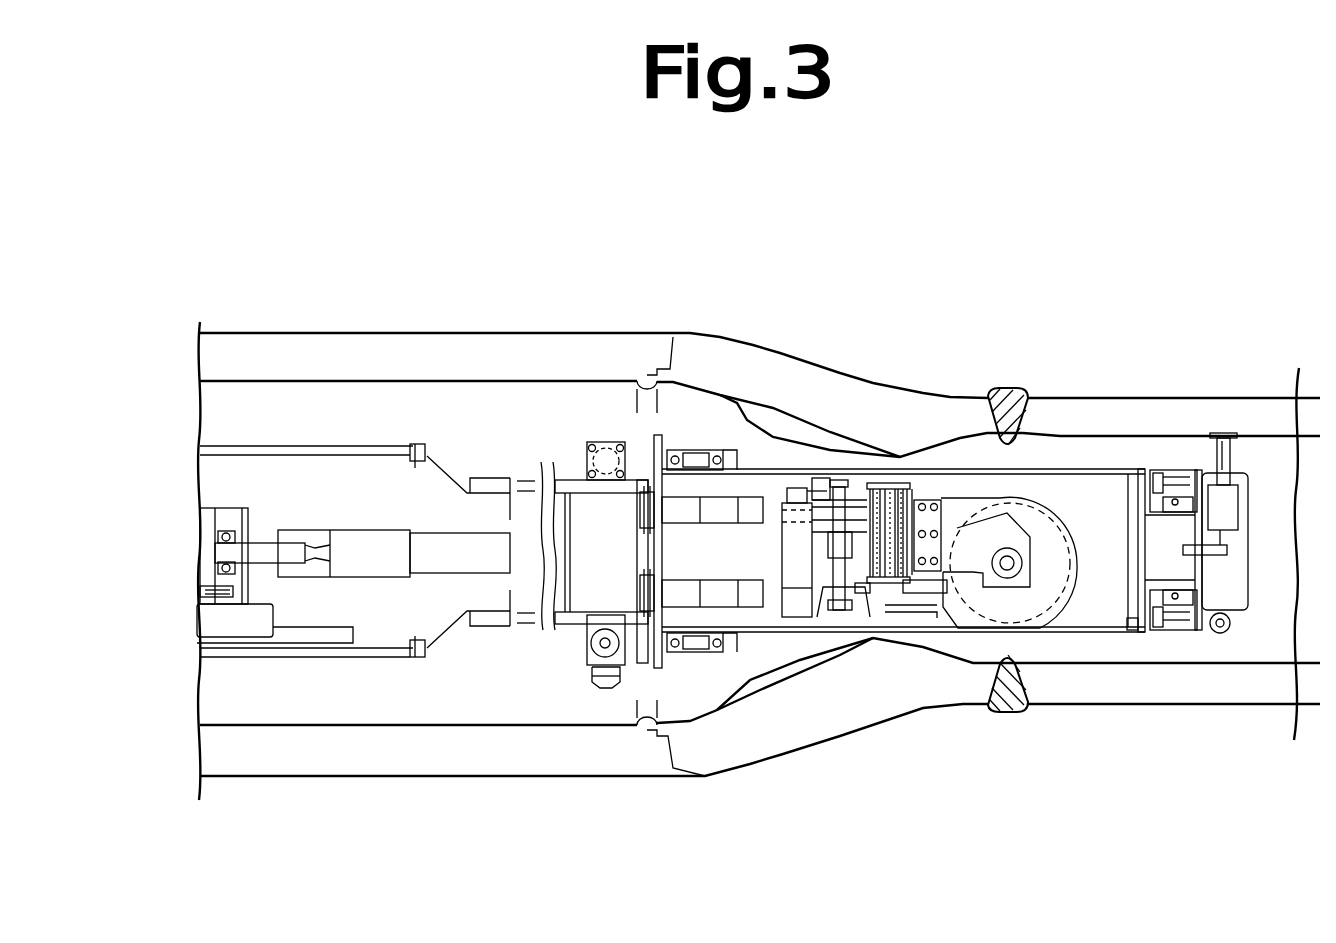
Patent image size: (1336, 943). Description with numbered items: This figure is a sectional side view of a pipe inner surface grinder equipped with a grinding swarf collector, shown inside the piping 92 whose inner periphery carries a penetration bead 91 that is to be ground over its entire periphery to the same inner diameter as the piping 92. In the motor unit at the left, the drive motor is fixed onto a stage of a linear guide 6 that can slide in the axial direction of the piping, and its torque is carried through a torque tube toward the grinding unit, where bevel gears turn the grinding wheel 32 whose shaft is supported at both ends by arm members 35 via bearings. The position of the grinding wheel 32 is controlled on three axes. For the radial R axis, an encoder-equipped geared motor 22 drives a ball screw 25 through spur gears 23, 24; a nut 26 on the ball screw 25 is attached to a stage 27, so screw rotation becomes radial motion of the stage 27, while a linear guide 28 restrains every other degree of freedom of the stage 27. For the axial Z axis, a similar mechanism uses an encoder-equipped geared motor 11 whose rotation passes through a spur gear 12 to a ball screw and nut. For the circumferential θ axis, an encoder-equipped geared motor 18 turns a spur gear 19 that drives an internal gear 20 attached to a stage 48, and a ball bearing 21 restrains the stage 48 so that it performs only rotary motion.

The linear guide 6 is at (275, 728).
The encoder-equipped geared motor 11 is at (714, 715).
The spur gear 12 is at (531, 643).
The encoder-equipped geared motor 18 is at (712, 365).
The spur gear 19 is at (516, 447).
The internal gear 20 is at (587, 472).
The ball bearing 21 is at (665, 453).
The encoder-equipped geared motor 22 is at (800, 652).
The spur gear 23 is at (822, 376).
The spur gear 24 is at (847, 395).
The ball screw 25 is at (839, 685).
The nut 26 is at (897, 652).
The stage 27 is at (914, 401).
The linear guide 28 is at (926, 694).
The grinding wheel 32 is at (1023, 644).
The arm member 35 is at (1005, 452).
The stage 48 is at (903, 400).
The penetration bead 91 is at (1012, 484).
The piping 92 is at (1171, 508).